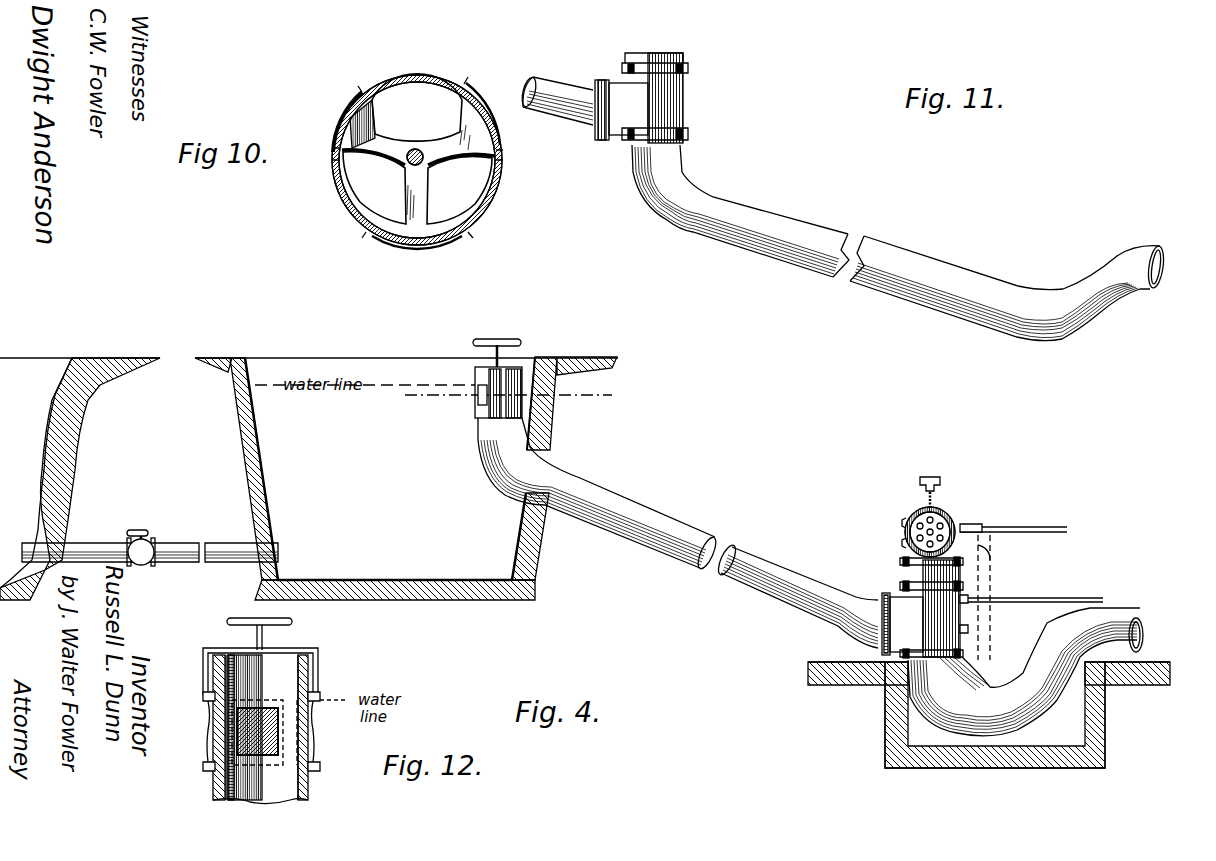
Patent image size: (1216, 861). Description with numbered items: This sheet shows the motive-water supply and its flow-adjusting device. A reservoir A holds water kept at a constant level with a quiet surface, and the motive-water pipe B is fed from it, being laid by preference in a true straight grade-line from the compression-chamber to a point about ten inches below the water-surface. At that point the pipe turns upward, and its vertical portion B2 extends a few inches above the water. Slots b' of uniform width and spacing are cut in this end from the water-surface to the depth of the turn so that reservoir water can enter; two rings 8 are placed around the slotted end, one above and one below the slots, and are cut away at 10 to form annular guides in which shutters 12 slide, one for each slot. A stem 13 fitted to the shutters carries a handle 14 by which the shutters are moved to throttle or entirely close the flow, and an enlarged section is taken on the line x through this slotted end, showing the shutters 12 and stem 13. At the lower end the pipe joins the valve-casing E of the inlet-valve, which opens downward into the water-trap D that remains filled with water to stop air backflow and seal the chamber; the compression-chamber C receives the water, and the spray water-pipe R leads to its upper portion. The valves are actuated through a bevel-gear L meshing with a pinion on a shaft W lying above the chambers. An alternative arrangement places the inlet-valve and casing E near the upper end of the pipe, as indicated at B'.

In FIG. 4, the reservoir A is at (340, 460).
In FIG. 11, the motive-water pipe B is at (556, 84).
In FIG. 4, the motive-water pipe B is at (678, 533).
In FIG. 11, the alternative inlet-valve location on motive-water pipe B' is at (899, 243).
In FIG. 4, the vertical portion of the pipe B2 is at (533, 404).
In FIG. 12, the vertical portion of the pipe B2 is at (260, 726).
In FIG. 10, the slots b' is at (418, 149).
In FIG. 4, the slots b' is at (459, 405).
In FIG. 12, the slots b' is at (257, 731).
In FIG. 4, the compression-chamber C is at (1025, 672).
In FIG. 4, the water-trap D is at (989, 715).
In FIG. 11, the valve-casing E is at (688, 108).
In FIG. 4, the valve-casing E is at (922, 607).
In FIG. 4, the bevel-gear L is at (912, 514).
In FIG. 4, the shaft W is at (992, 525).
In FIG. 4, the water-pipe R is at (1015, 623).
In FIG. 4, the section line x is at (509, 392).
In FIG. 12, the rings 8 is at (205, 697).
In FIG. 12, the cut-away annular slots or guides 10 is at (205, 710).
In FIG. 10, the shutters 12 is at (350, 105).
In FIG. 12, the shutters 12 is at (312, 750).
In FIG. 10, the stem 13 is at (424, 165).
In FIG. 4, the stem 13 is at (492, 352).
In FIG. 12, the stem 13 is at (250, 633).
In FIG. 4, the handle or handpiece 14 is at (497, 330).
In FIG. 12, the handle or handpiece 14 is at (240, 617).